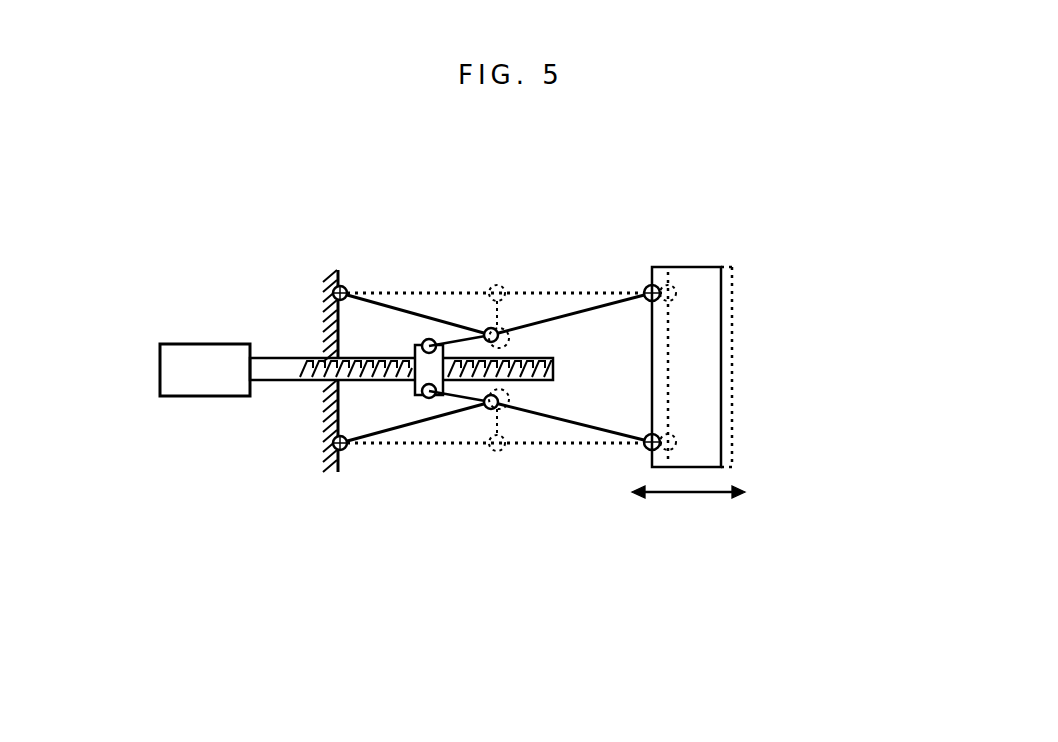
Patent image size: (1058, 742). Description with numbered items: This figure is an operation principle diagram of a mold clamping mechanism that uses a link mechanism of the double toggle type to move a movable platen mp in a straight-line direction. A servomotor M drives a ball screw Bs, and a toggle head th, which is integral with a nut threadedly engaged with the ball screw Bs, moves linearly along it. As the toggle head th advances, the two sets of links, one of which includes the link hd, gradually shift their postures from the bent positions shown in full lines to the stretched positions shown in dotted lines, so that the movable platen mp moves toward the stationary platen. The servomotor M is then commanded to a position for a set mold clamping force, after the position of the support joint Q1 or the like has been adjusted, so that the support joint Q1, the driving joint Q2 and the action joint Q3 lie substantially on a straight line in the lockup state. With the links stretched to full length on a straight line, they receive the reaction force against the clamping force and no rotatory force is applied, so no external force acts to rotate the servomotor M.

The servomotor M is at (205, 370).
The ball screw Bs is at (298, 357).
The toggle head th is at (415, 382).
The support joint Q1 is at (343, 290).
The driving joint Q2 is at (496, 328).
The action joint Q3 is at (648, 288).
The link hd is at (563, 420).
The movable platen mp is at (698, 372).